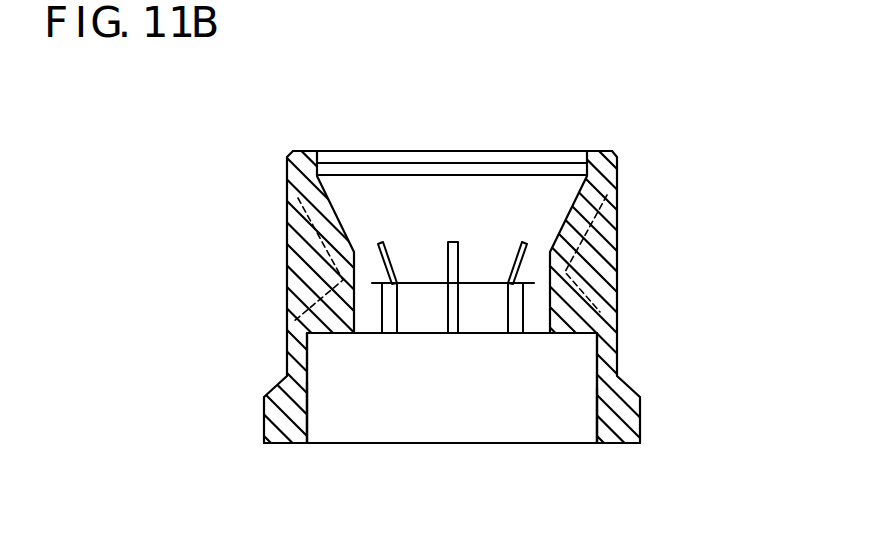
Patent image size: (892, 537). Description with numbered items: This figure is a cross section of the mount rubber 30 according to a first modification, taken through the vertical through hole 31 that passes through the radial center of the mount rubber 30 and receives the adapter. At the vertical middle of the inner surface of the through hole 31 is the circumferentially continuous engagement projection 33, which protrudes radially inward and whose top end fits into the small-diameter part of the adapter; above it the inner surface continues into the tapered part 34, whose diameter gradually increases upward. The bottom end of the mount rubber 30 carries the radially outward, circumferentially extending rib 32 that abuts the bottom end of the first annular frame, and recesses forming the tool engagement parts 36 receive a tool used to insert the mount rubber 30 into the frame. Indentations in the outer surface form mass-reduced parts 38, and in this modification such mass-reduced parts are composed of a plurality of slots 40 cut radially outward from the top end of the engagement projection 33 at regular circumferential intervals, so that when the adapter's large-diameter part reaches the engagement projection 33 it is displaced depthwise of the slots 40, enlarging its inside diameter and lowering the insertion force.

The mount rubber 30 is at (264, 104).
The through hole 31 is at (390, 300).
The rib 32 is at (632, 420).
The engagement projection 33 is at (537, 335).
The tapered part 34 is at (571, 208).
The tool engagement parts 36 is at (307, 382).
The mass-reduced parts 38 is at (318, 241).
The slots 40 is at (364, 295).